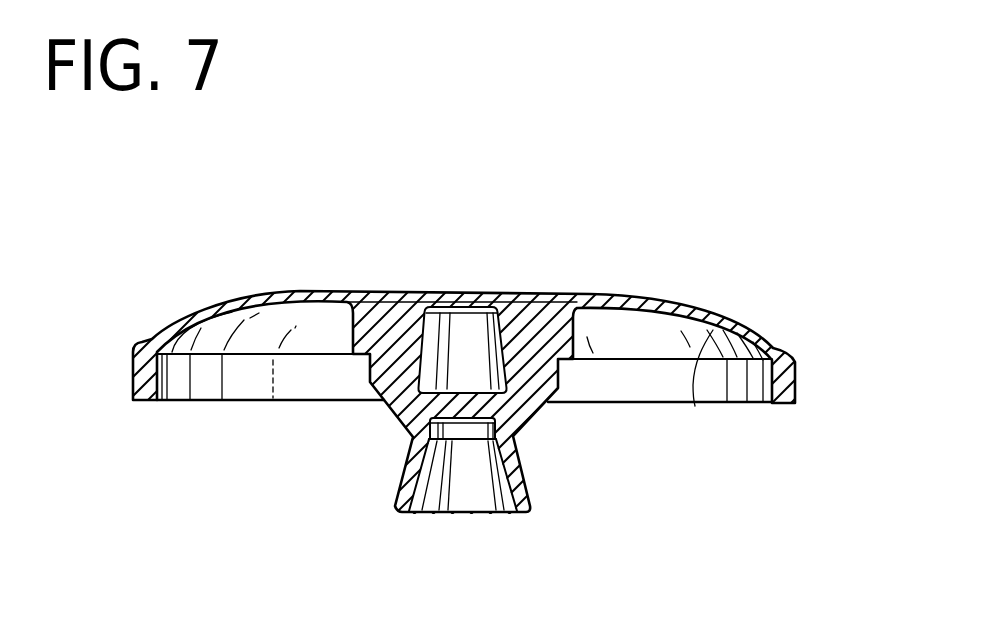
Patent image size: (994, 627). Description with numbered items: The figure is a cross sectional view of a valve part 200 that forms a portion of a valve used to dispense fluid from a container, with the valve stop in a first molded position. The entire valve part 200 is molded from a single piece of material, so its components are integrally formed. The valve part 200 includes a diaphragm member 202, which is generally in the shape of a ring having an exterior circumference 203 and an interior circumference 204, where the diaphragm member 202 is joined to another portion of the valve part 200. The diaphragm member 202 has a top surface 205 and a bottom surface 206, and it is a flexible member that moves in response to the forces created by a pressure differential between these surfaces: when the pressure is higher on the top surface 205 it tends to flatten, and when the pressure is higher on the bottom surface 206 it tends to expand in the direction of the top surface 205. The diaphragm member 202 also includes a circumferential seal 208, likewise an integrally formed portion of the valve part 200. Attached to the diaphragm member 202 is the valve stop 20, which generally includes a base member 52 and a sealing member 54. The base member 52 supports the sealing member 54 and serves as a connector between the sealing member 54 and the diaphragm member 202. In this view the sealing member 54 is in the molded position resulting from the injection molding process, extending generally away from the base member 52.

The valve part 200 is at (490, 226).
The valve stop 20 is at (370, 446).
The base member 52 is at (524, 401).
The sealing member 54 is at (390, 471).
The diaphragm member 202 is at (692, 304).
The exterior circumference 203 is at (152, 339).
The interior circumference 204 is at (395, 293).
The top surface 205 is at (204, 308).
The bottom surface 206 is at (695, 406).
The circumferential seal 208 is at (796, 388).